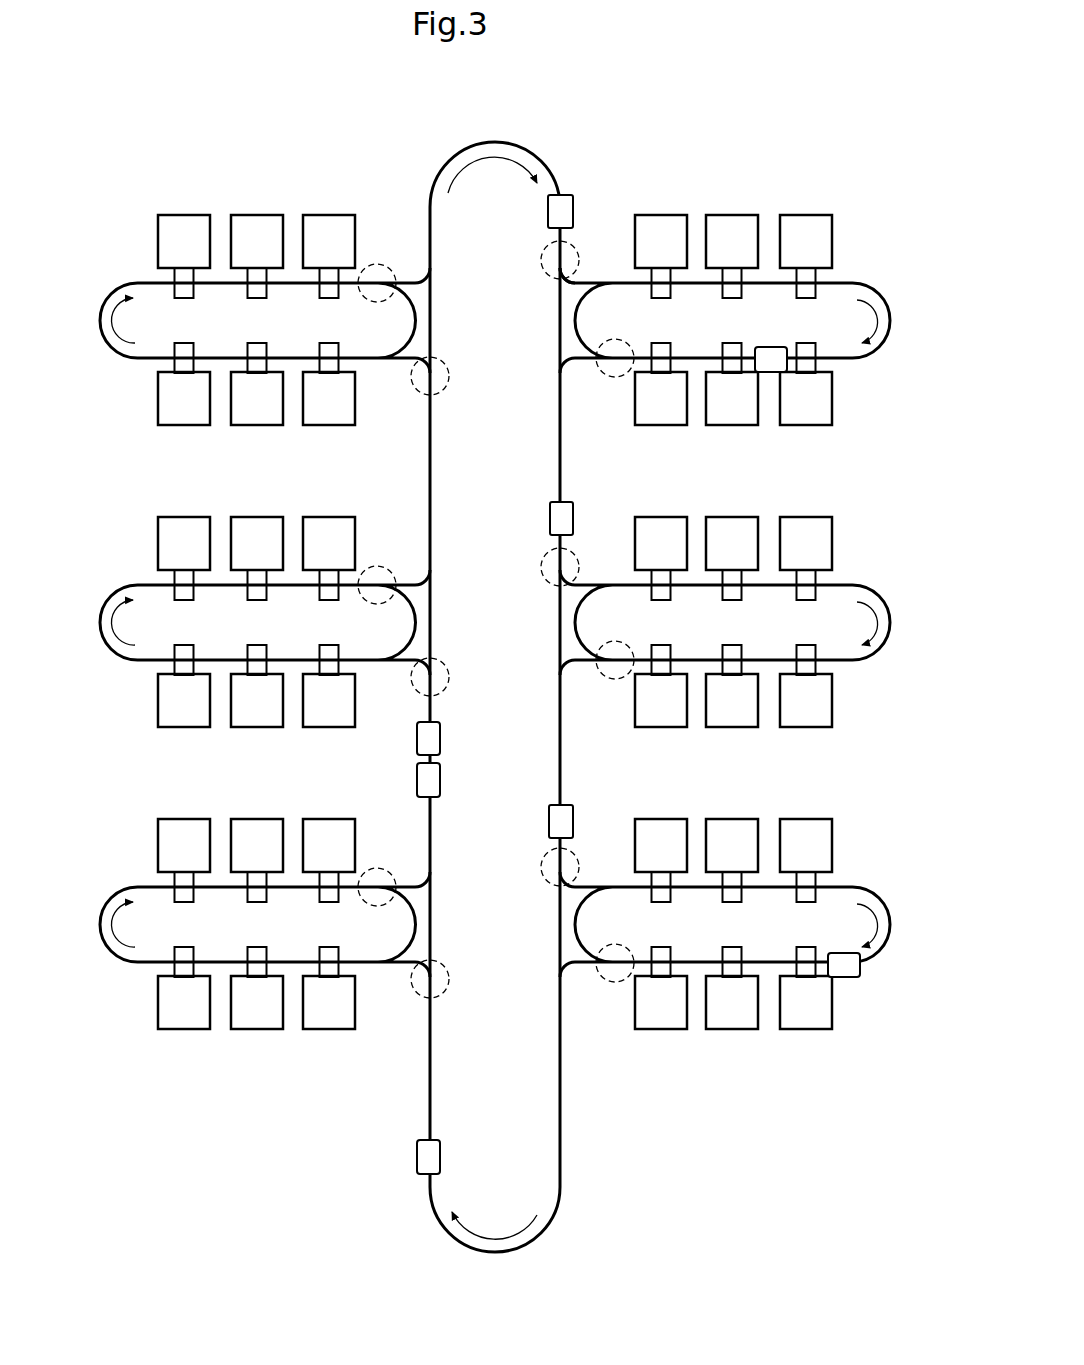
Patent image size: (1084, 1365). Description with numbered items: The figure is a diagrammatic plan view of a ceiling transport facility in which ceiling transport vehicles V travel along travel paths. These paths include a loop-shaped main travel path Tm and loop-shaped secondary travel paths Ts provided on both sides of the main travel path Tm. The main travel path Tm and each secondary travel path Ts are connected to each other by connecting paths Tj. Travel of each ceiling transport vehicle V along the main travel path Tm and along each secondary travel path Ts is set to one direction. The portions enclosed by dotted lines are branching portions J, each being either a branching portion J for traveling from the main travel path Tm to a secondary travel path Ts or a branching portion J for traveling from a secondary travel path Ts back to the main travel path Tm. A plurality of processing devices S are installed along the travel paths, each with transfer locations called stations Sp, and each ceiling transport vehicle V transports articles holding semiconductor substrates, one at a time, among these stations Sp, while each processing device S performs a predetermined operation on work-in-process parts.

The main travel path Tm is at (442, 168).
The secondary travel path Ts is at (872, 286).
The connecting path Tj is at (588, 282).
The processing device S is at (329, 215).
The station Sp is at (329, 298).
The ceiling transport vehicle V is at (548, 213).
The branching portion J is at (381, 265).